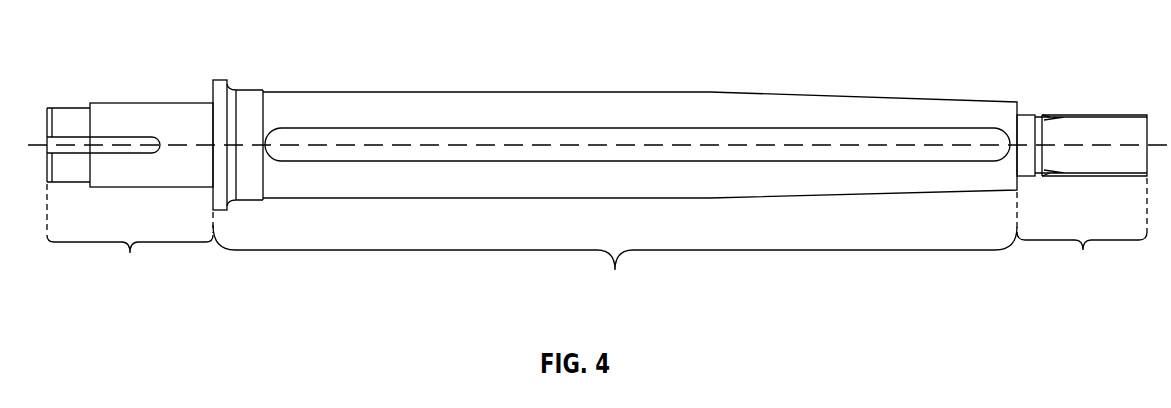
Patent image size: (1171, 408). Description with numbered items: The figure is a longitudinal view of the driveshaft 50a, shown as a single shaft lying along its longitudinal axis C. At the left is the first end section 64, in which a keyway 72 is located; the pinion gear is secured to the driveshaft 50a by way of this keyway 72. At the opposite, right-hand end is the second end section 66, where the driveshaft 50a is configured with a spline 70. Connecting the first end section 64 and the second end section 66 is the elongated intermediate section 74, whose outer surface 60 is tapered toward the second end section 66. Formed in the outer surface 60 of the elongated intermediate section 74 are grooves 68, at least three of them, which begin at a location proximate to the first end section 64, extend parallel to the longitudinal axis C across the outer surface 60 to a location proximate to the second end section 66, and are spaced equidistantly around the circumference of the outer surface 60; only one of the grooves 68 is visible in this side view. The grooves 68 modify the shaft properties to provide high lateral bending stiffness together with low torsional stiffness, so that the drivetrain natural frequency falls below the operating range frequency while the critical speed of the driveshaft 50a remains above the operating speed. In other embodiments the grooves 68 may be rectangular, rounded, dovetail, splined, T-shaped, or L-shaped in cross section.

The driveshaft 50a is at (599, 170).
The outer surface 60 is at (430, 91).
The first end section 64 is at (130, 171).
The second end section 66 is at (1085, 171).
The grooves 68 is at (498, 132).
The spline 70 is at (1108, 113).
The keyway 72 is at (62, 140).
The elongated intermediate section 74 is at (615, 174).
The longitudinal axis C is at (1097, 144).